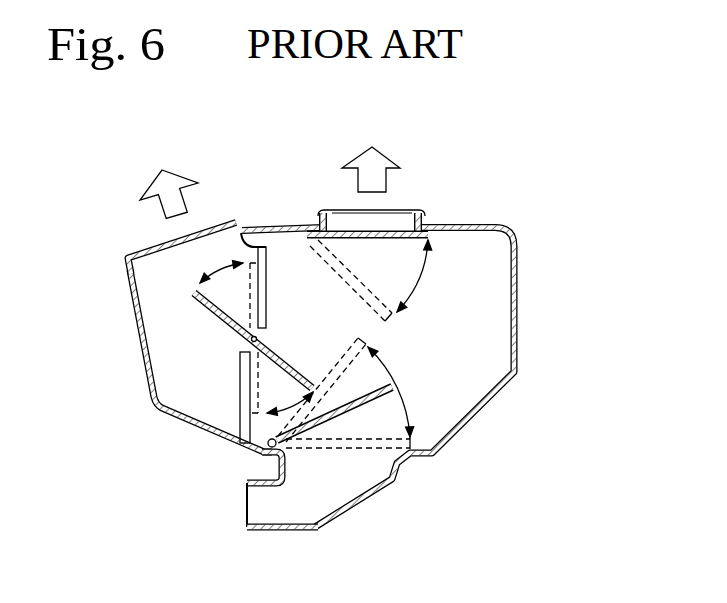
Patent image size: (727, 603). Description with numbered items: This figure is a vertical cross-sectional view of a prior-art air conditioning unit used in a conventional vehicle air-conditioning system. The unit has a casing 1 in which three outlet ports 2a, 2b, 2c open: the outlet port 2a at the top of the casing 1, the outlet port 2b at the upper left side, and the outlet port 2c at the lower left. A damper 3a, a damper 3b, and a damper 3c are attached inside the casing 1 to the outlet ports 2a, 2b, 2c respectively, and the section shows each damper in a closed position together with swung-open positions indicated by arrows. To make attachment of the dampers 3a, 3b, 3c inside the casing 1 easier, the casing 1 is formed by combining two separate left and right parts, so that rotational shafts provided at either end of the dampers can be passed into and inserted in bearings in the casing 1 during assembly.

The casing 1 is at (522, 220).
The outlet port 2a is at (386, 222).
The outlet port 2b is at (204, 228).
The outlet port 2c is at (255, 499).
The damper 3a is at (419, 267).
The damper 3b is at (197, 300).
The damper 3c is at (372, 400).